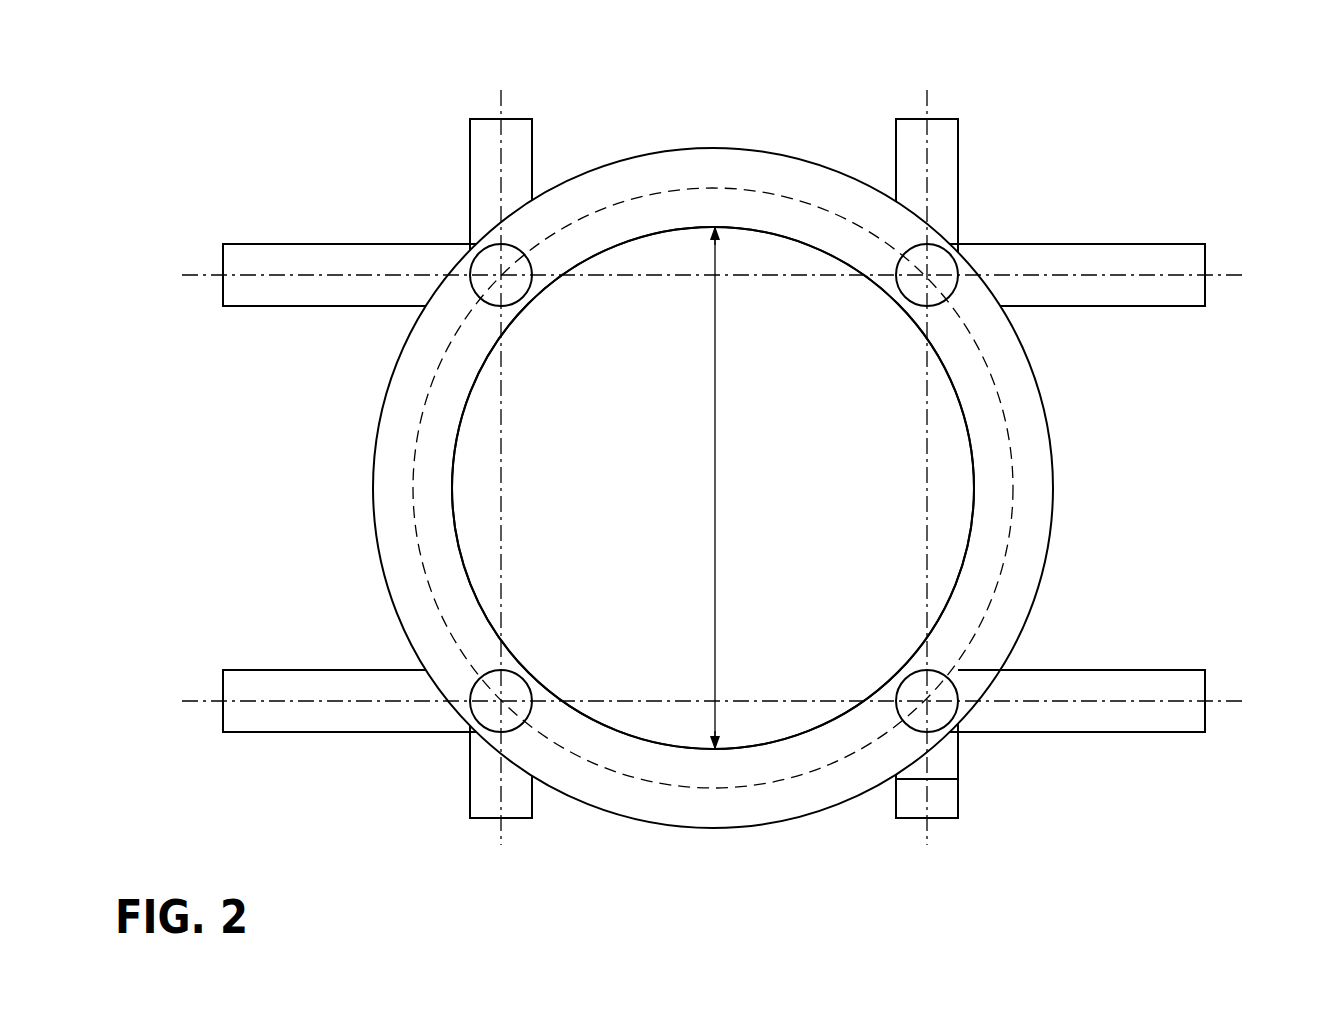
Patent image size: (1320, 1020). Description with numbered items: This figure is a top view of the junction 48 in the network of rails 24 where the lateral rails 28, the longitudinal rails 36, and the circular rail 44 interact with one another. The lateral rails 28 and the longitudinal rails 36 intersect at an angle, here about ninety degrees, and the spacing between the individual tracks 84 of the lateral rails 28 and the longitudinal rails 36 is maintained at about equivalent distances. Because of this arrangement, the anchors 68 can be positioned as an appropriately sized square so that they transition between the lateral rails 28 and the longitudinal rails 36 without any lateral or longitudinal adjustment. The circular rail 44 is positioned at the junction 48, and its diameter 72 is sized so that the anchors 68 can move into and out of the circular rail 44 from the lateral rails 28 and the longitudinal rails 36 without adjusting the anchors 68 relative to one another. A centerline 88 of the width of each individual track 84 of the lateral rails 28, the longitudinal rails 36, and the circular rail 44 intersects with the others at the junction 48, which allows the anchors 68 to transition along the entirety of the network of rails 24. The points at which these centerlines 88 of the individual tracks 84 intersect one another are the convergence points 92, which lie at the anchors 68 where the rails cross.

The network of rails 24 is at (292, 93).
The lateral rails 28 is at (520, 112).
The longitudinal rails 36 is at (1210, 290).
The circular rail 44 is at (1062, 480).
The junction 48 is at (583, 495).
The anchors 68 is at (472, 264).
The diameter 72 is at (716, 515).
The individual tracks 84 is at (470, 152).
The centerline 88 is at (500, 110).
The convergence points 92 is at (526, 295).